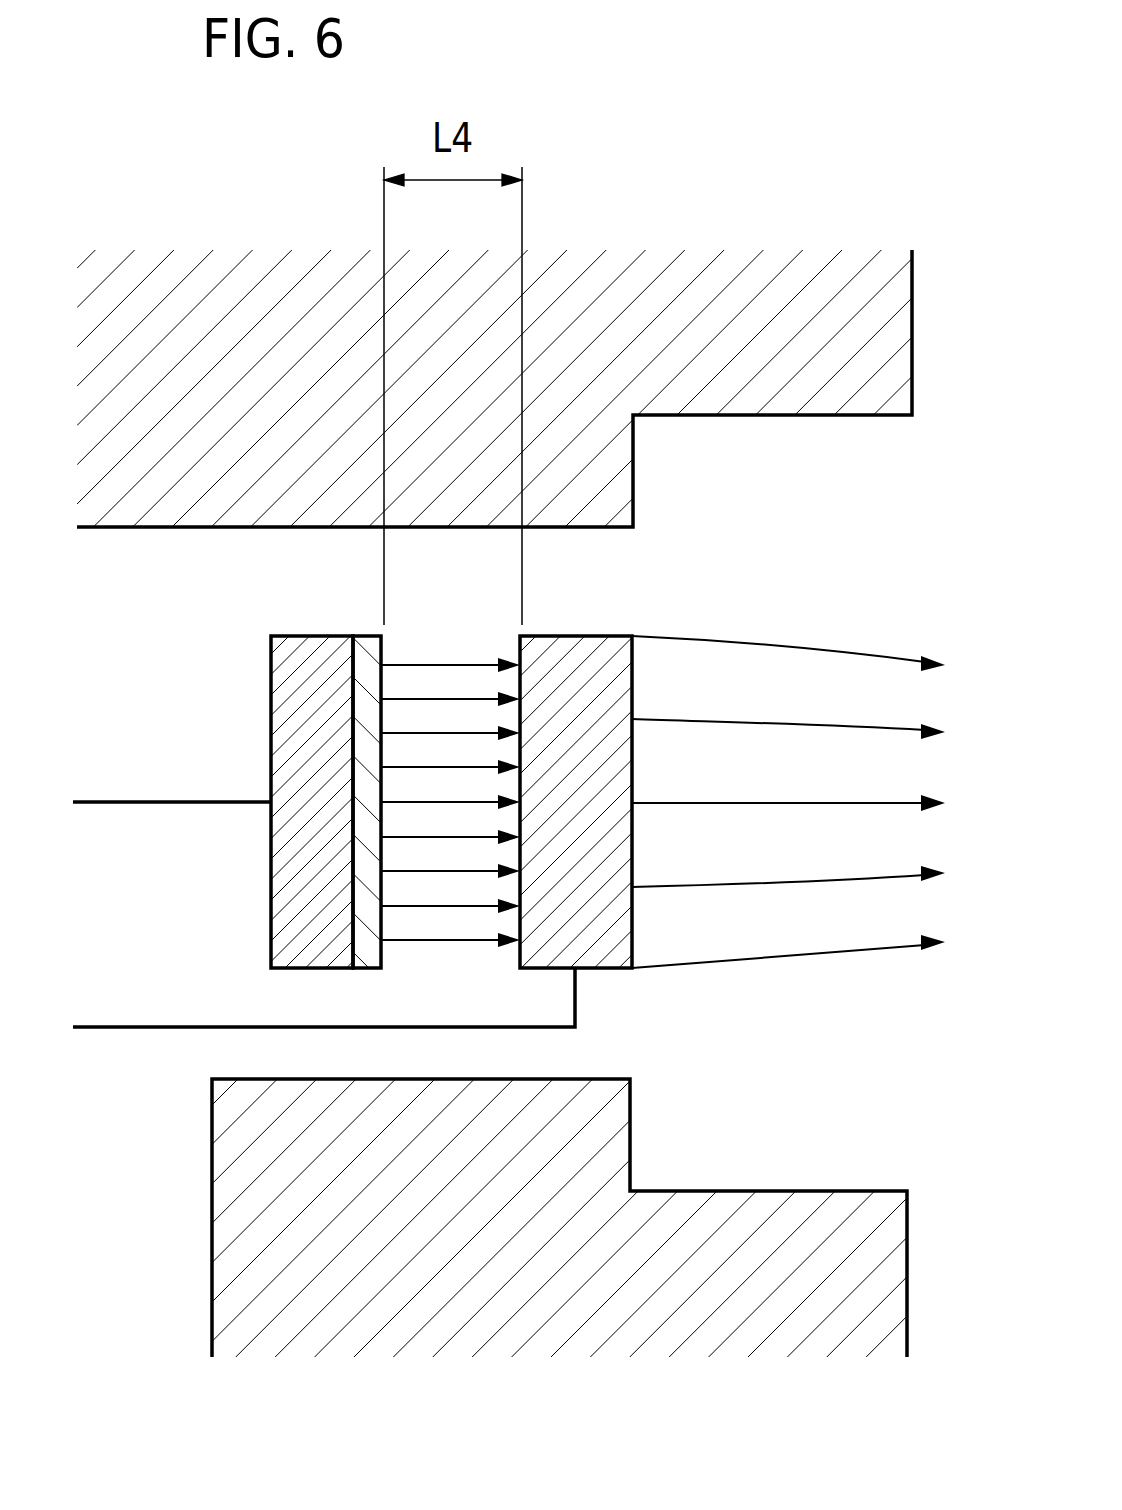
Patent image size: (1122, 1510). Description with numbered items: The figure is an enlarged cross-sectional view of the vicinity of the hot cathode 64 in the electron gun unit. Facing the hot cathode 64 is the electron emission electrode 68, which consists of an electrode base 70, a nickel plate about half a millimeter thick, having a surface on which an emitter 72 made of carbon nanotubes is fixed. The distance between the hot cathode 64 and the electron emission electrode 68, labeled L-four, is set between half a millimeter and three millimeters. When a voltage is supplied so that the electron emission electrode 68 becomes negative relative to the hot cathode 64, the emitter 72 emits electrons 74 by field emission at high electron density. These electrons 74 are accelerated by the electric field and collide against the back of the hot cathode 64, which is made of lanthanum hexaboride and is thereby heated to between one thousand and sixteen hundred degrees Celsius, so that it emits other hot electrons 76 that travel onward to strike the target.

The hot cathode 64 is at (587, 637).
The electron emission electrode 68 is at (209, 767).
The electrode base 70 is at (271, 677).
The emitter 72 is at (368, 635).
The electrons 74 is at (450, 663).
The hot electrons 76 is at (807, 648).